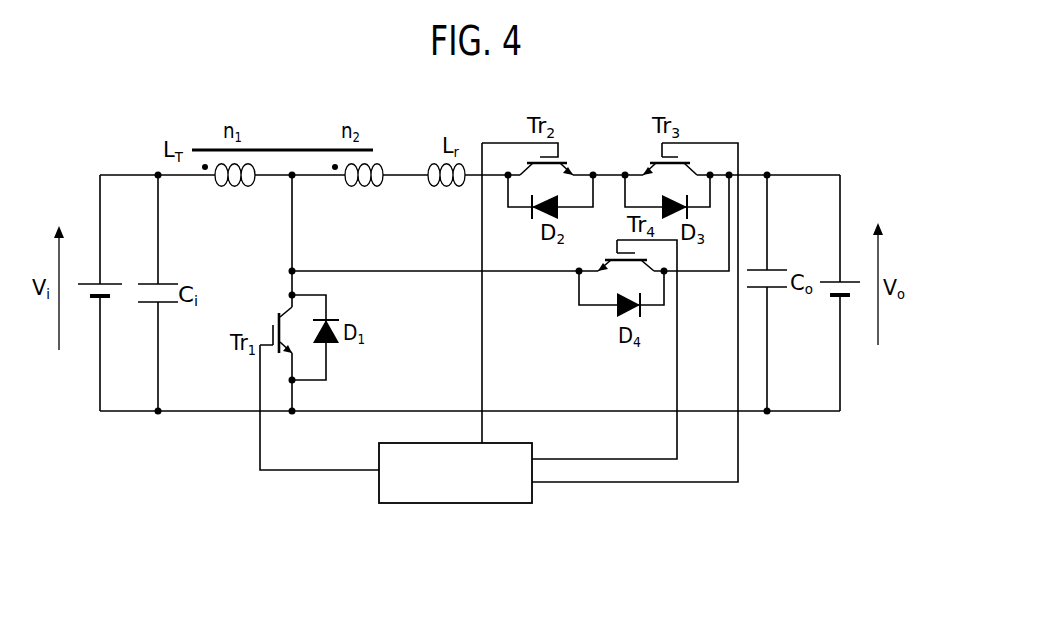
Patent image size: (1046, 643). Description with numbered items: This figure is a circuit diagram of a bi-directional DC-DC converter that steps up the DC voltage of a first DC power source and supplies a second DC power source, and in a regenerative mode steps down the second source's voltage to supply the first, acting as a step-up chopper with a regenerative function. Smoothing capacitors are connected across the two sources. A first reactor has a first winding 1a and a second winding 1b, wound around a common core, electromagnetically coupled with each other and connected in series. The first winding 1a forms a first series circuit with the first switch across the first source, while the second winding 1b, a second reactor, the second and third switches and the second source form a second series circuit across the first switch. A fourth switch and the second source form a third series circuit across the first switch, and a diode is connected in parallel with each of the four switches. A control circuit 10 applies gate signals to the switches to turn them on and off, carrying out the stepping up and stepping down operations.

The first winding 1a is at (241, 188).
The second winding 1b is at (369, 188).
The control circuit 10 is at (456, 505).